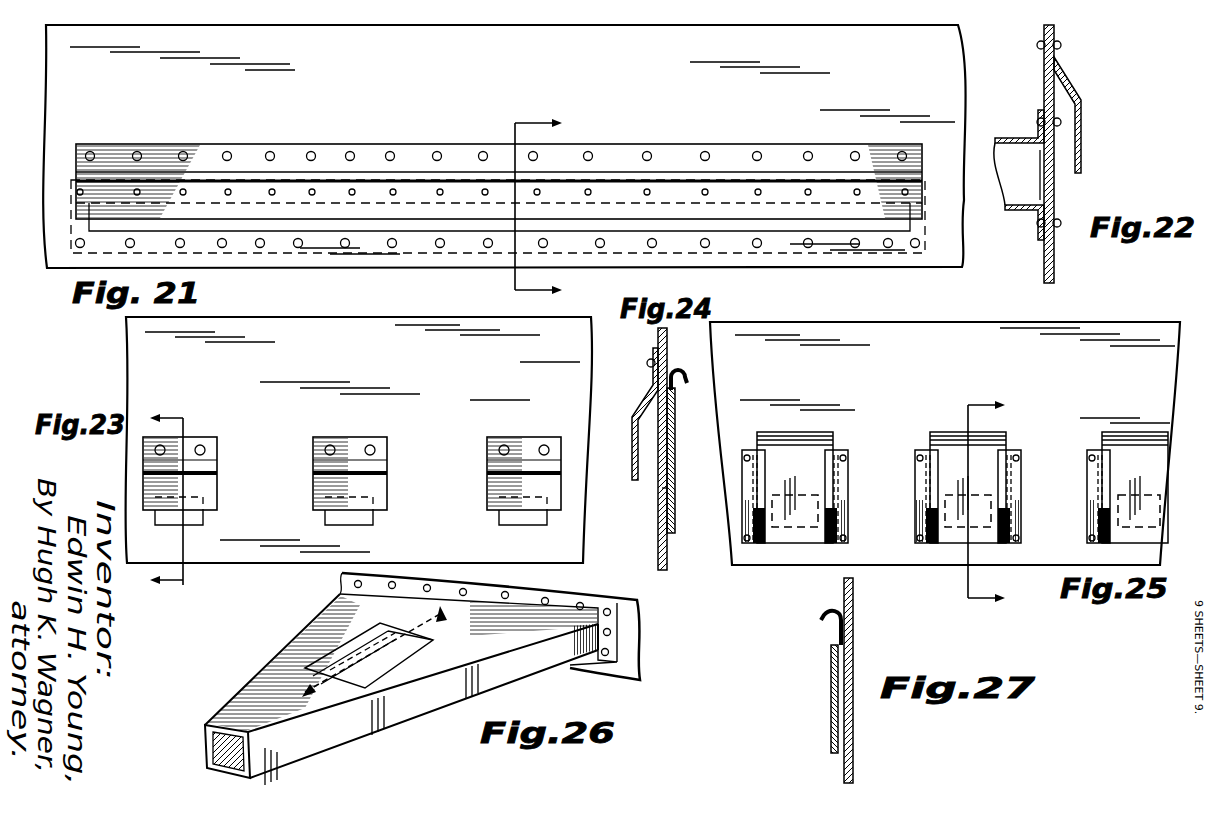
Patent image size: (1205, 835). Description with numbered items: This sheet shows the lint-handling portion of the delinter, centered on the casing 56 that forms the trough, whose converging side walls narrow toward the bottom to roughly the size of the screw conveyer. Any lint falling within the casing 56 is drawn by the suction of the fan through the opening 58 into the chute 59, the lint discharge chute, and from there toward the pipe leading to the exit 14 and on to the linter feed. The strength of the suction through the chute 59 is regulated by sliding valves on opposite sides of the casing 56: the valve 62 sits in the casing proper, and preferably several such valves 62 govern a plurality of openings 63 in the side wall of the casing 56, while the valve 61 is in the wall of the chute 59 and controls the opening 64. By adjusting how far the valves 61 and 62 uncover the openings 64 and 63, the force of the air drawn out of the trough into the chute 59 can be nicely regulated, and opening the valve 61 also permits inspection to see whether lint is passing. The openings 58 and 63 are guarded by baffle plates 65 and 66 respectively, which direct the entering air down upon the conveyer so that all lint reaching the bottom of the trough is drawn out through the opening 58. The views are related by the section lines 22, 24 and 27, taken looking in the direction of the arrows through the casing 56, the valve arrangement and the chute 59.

In FIG. 26, the exit 14 is at (213, 757).
In FIG. 21, the section line 22— 22 is at (557, 207).
In FIG. 23, the section line 24— 24 is at (169, 498).
In FIG. 25, the section line 24— 24 is at (1004, 505).
In FIG. 26, the section line 27— 27 is at (382, 664).
In FIG. 21, the casing 56 is at (504, 146).
In FIG. 22, the casing 56 is at (1044, 88).
In FIG. 23, the casing 56 is at (358, 440).
In FIG. 24, the casing 56 is at (658, 338).
In FIG. 25, the casing 56 is at (945, 443).
In FIG. 22, the opening 58 is at (1040, 181).
In FIG. 21, the chute 59 is at (72, 238).
In FIG. 22, the chute 59 is at (1015, 204).
In FIG. 26, the chute 59 is at (490, 642).
In FIG. 27, the chute 59 is at (853, 619).
In FIG. 26, the sliding valve 61 is at (520, 678).
In FIG. 27, the sliding valve 61 is at (838, 634).
In FIG. 24, the sliding valve 62 is at (687, 385).
In FIG. 25, the sliding valve 62 is at (955, 487).
In FIG. 23, the opening 63 is at (205, 520).
In FIG. 24, the opening 63 is at (662, 488).
In FIG. 25, the opening 63 is at (797, 530).
In FIG. 27, the opening 64 is at (846, 726).
In FIG. 21, the baffle plate 65 is at (410, 192).
In FIG. 22, the baffle plate 65 is at (1081, 140).
In FIG. 23, the baffle plate 66 is at (217, 490).
In FIG. 24, the baffle plate 66 is at (632, 458).